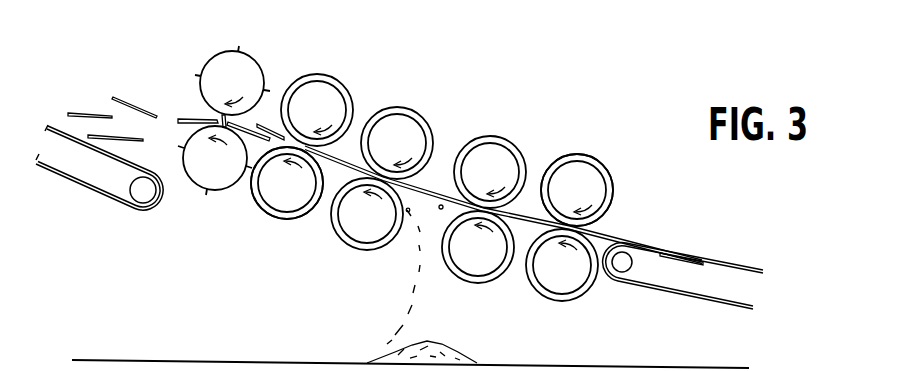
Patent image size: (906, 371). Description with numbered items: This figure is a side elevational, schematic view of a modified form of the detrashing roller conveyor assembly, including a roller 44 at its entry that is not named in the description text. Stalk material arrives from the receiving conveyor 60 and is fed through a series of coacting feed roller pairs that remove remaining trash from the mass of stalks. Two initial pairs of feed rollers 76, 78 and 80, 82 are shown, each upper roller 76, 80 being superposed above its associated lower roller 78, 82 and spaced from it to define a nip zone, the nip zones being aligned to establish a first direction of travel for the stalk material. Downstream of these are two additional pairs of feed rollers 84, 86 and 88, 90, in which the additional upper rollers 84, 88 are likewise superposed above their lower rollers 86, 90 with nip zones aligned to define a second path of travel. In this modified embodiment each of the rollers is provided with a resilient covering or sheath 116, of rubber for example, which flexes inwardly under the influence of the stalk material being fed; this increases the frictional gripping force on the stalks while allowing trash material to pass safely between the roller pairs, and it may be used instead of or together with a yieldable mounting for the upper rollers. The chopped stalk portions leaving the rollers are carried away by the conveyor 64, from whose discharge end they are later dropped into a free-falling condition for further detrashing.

The brush roller 44 is at (248, 68).
The receiving conveyor 60 is at (733, 272).
The conveyor 64 is at (102, 193).
The upper feed roller 76 is at (570, 170).
The lower feed roller 78 is at (562, 287).
The upper feed roller 80 is at (493, 150).
The lower feed roller 82 is at (483, 267).
The additional upper feed roller 84 is at (412, 128).
The additional lower feed roller 86 is at (372, 235).
The additional upper feed roller 88 is at (330, 102).
The additional lower feed roller 90 is at (293, 205).
The resilient covering or sheath 116 is at (260, 208).